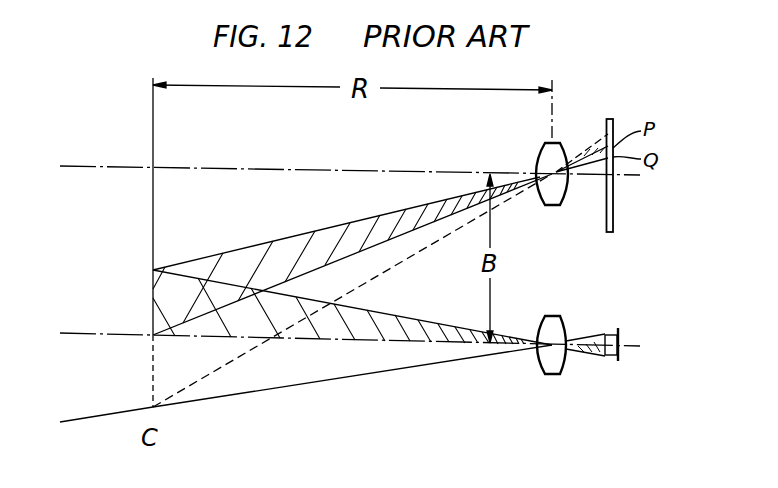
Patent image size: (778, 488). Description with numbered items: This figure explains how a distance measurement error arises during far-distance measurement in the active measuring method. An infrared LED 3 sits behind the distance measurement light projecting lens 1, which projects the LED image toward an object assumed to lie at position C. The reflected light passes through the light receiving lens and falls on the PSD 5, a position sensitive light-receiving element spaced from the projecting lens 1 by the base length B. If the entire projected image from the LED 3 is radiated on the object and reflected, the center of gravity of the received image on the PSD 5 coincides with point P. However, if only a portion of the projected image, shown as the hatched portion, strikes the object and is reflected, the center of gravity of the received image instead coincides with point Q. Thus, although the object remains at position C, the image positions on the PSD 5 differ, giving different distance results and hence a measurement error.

The distance measurement light projecting lens 1 is at (552, 318).
The infrared LED 3 is at (610, 335).
The PSD (Position Sensitive Device) 5 is at (609, 120).